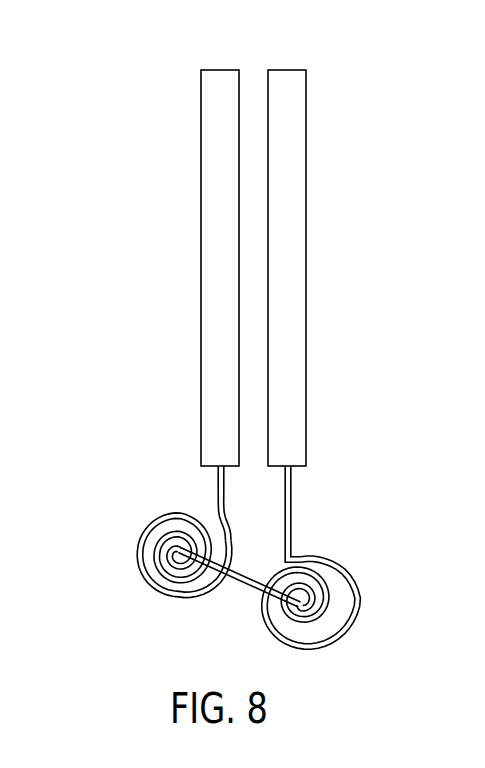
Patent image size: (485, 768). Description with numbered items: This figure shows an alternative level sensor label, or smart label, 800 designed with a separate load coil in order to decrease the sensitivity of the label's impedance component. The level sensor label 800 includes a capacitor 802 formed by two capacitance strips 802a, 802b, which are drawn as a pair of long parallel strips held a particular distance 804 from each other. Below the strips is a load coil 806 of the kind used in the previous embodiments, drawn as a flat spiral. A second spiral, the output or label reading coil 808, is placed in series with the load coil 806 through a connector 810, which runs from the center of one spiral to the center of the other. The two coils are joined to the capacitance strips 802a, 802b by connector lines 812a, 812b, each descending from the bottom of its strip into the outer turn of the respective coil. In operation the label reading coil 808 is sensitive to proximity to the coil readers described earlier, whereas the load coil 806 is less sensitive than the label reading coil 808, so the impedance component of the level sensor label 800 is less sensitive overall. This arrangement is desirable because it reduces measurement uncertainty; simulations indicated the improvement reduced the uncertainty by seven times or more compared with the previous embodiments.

The level sensor label 800 is at (93, 123).
The capacitor 802 is at (170, 123).
The capacitance strip 802a is at (220, 78).
The capacitance strip 802b is at (297, 78).
The distance 804 is at (257, 80).
The load coil 806 is at (140, 533).
The label reading coil 808 is at (362, 583).
The connector 810 is at (243, 589).
The connector line 812a is at (218, 490).
The connector line 812b is at (292, 493).